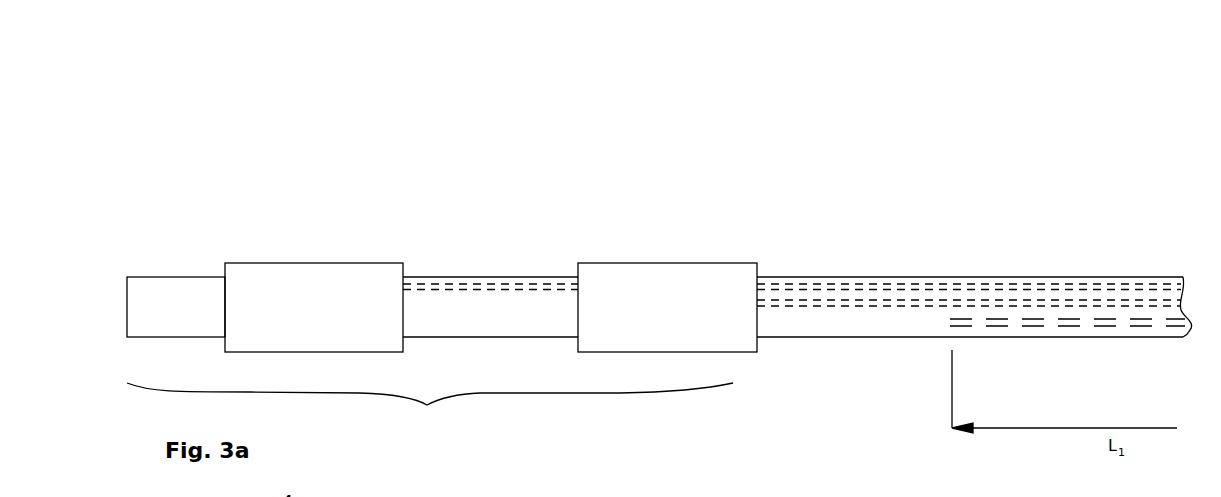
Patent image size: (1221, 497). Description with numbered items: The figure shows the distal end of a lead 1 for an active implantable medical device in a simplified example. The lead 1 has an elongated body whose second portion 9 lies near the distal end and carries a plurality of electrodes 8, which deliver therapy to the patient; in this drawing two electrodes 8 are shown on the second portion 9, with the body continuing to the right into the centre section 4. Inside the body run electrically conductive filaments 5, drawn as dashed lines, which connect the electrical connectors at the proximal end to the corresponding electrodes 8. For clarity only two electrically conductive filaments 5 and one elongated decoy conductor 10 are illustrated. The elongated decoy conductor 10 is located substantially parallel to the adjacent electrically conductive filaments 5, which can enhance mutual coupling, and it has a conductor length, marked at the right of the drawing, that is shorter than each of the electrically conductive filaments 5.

The lead 1 is at (469, 180).
The centre section 4 is at (1075, 278).
The electrically conductive filaments 5 is at (483, 290).
The electrodes 8 is at (292, 278).
The second portion 9 is at (432, 410).
The elongated decoy conductor 10 is at (1047, 326).